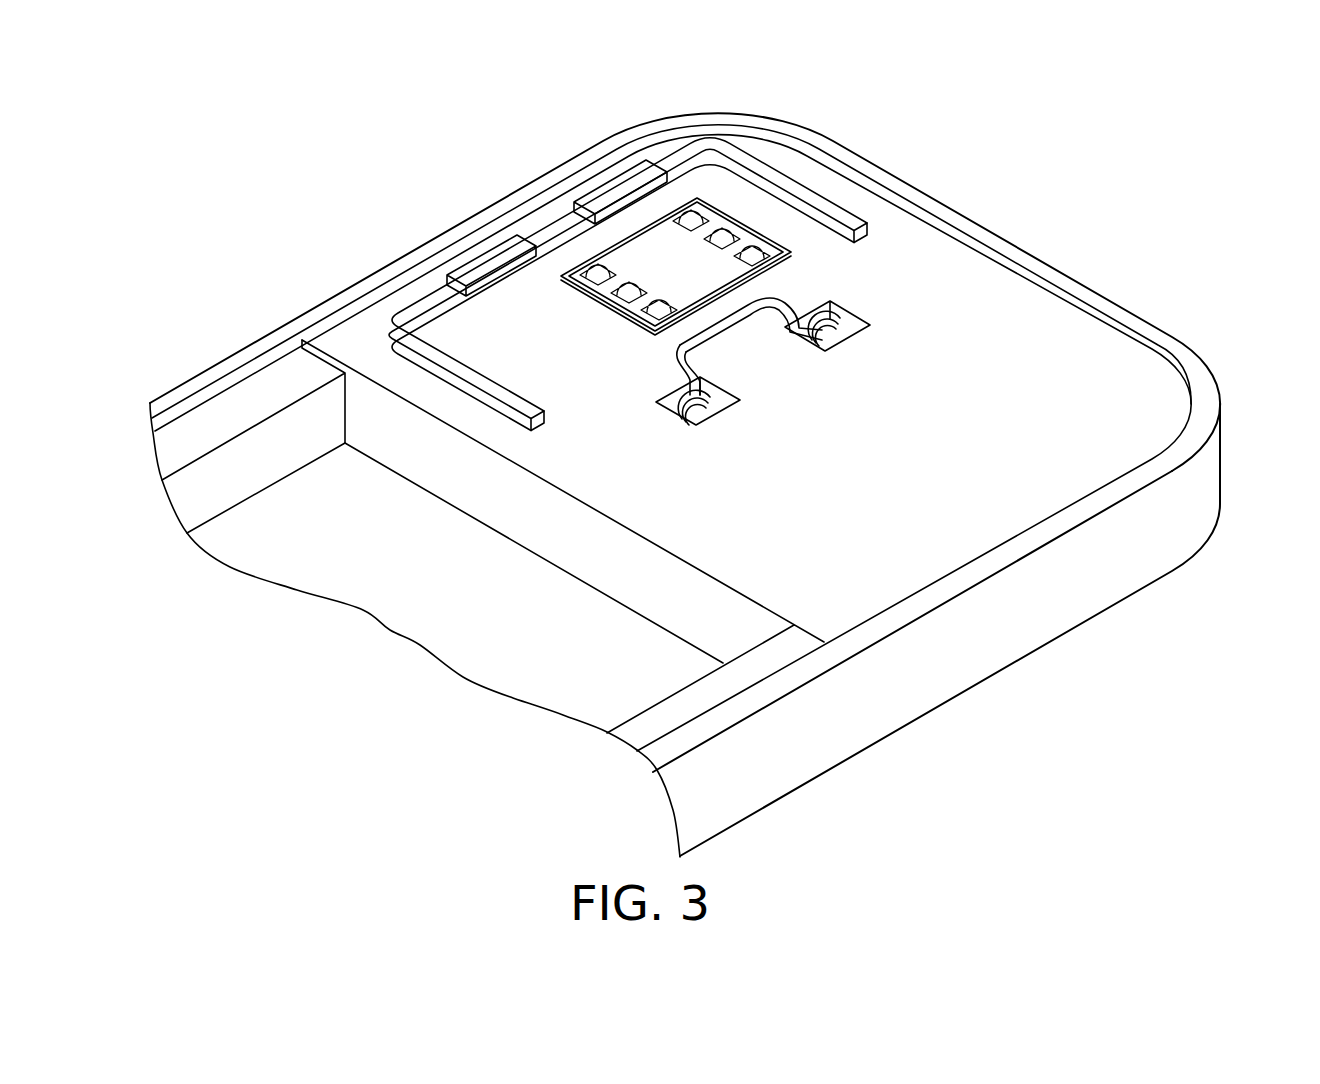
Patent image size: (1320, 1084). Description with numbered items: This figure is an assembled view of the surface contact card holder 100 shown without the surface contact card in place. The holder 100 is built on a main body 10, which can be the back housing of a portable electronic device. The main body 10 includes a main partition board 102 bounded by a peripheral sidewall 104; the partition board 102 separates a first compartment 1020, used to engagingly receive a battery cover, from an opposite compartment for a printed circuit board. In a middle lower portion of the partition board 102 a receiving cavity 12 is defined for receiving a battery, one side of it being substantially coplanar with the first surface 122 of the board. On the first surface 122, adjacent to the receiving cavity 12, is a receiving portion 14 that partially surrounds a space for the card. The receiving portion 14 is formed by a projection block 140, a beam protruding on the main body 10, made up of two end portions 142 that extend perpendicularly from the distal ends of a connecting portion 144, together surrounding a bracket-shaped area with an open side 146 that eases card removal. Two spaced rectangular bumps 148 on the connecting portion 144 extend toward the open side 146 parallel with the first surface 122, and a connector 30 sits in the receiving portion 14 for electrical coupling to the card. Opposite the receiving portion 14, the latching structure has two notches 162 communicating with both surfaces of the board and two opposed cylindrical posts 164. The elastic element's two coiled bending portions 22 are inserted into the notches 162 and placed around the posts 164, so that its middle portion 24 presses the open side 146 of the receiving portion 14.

The main body 10 is at (1182, 586).
The surface contact card holder 100 is at (770, 88).
The main partition board 102 is at (205, 428).
The first compartment 1020 is at (275, 358).
The peripheral sidewall 104 is at (948, 668).
The receiving cavity 12 is at (645, 677).
The first surface 122 is at (1140, 390).
The receiving portion 14 is at (731, 381).
The projection block 140 is at (563, 380).
The end portions 142 is at (743, 155).
The connecting portion 144 is at (548, 230).
The open side 146 is at (825, 247).
The rectangular bumps 148 is at (512, 250).
The notches 162 is at (850, 327).
The posts 164 is at (698, 413).
The bending portions 22 is at (825, 342).
The middle portion 24 is at (740, 315).
The connector 30 is at (673, 255).